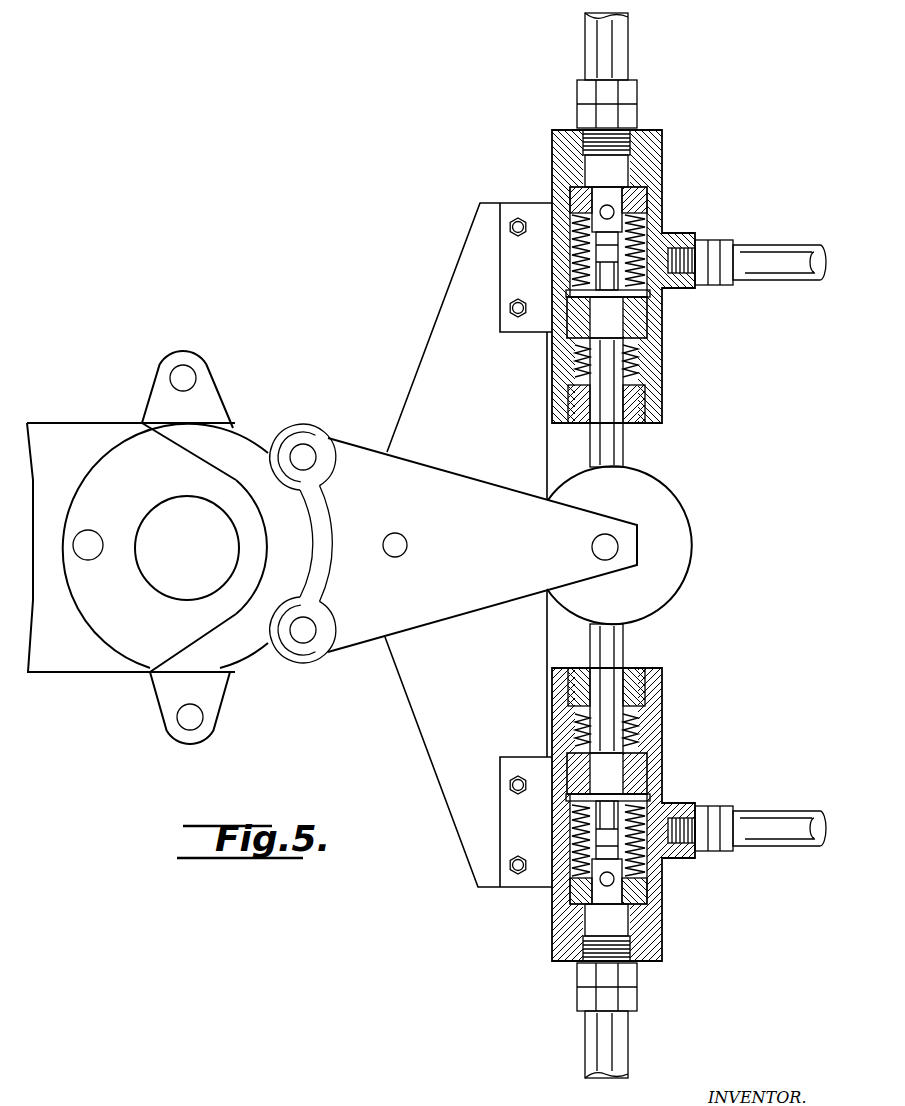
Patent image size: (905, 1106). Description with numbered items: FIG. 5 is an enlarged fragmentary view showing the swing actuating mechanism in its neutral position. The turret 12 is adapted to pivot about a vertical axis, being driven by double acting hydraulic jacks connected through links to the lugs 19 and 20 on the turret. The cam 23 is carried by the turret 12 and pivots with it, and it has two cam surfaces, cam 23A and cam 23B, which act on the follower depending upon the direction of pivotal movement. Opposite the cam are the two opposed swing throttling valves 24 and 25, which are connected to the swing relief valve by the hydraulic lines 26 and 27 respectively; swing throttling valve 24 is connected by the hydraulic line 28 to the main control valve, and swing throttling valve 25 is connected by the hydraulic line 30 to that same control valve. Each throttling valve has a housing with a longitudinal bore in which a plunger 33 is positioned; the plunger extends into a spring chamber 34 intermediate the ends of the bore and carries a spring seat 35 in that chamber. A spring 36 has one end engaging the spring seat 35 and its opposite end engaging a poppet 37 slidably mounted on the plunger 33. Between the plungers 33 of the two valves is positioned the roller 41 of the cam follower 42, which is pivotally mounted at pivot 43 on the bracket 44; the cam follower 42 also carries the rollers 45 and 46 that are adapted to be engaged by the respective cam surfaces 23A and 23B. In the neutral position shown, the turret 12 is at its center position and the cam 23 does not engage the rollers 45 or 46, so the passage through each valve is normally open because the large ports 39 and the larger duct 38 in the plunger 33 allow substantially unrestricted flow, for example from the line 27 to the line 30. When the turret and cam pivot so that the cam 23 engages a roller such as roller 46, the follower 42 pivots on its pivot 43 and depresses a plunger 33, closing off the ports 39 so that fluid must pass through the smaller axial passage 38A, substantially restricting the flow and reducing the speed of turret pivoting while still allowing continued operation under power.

The turret 12 is at (65, 430).
The lug 19 is at (165, 685).
The lug 20 is at (165, 370).
The cam 23 is at (155, 469).
The cam 23A is at (217, 465).
The cam 23B is at (202, 640).
The swing throttling valve 24 is at (655, 728).
The swing throttling valve 25 is at (660, 322).
The hydraulic line 26 is at (770, 815).
The hydraulic line 27 is at (762, 245).
The hydraulic line 28 is at (590, 1024).
The hydraulic line 30 is at (585, 45).
The plunger 33 is at (625, 446).
The spring chamber 34 is at (648, 243).
The spring seat 35 is at (650, 292).
The spring 36 is at (641, 216).
The poppet 37 is at (640, 190).
The duct 38 is at (606, 190).
The axial passage 38A is at (600, 250).
The port 39 is at (572, 189).
The roller 41 is at (665, 512).
The cam follower 42 is at (455, 495).
The pivot 43 is at (393, 533).
The bracket 44 is at (422, 735).
The roller 45 is at (304, 425).
The roller 46 is at (320, 662).